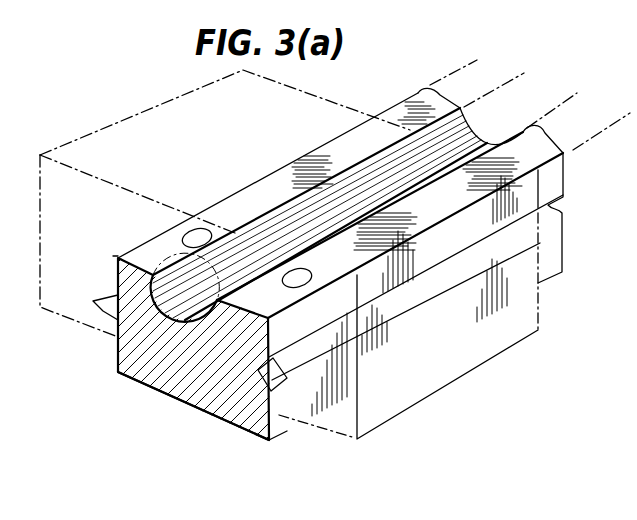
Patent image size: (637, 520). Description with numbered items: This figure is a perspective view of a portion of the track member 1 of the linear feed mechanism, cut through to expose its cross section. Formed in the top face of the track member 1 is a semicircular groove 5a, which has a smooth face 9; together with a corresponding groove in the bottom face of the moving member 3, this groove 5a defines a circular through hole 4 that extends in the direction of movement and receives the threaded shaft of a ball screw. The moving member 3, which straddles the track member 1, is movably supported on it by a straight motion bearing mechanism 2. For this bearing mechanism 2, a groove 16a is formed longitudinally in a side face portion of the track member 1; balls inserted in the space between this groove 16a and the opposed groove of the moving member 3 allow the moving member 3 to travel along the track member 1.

The track member 1 is at (194, 386).
The straight motion bearing mechanism 2 is at (280, 381).
The moving member 3 is at (407, 411).
The circular through hole 4 is at (118, 374).
The semicircular groove 5a is at (172, 323).
The smooth face 9 is at (158, 271).
The groove 16a is at (270, 377).